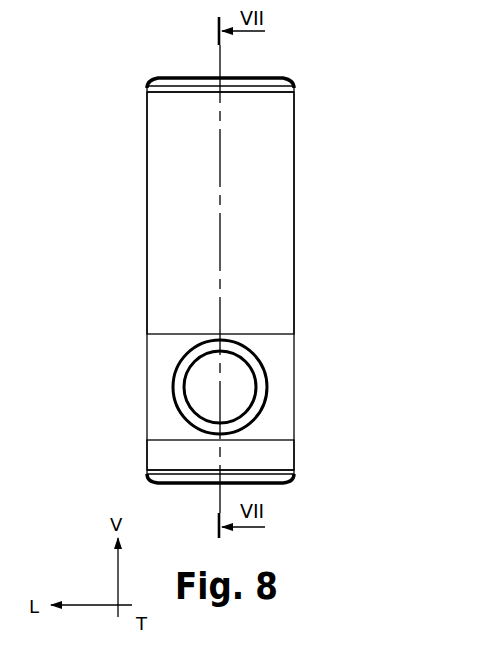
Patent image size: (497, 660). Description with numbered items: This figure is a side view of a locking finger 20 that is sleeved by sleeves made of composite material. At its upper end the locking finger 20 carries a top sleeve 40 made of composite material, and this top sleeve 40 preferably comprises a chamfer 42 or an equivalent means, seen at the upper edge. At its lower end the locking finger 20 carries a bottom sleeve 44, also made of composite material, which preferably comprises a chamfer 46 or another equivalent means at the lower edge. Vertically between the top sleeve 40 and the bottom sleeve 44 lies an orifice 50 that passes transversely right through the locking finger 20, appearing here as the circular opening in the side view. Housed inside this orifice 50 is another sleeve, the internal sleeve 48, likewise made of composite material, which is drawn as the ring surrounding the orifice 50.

The locking finger 20 is at (323, 262).
The top sleeve 40 is at (267, 197).
The chamfer 42 is at (299, 80).
The bottom sleeve 44 is at (275, 458).
The chamfer 46 is at (146, 480).
The internal sleeve 48 is at (262, 382).
The orifice 50 is at (212, 388).